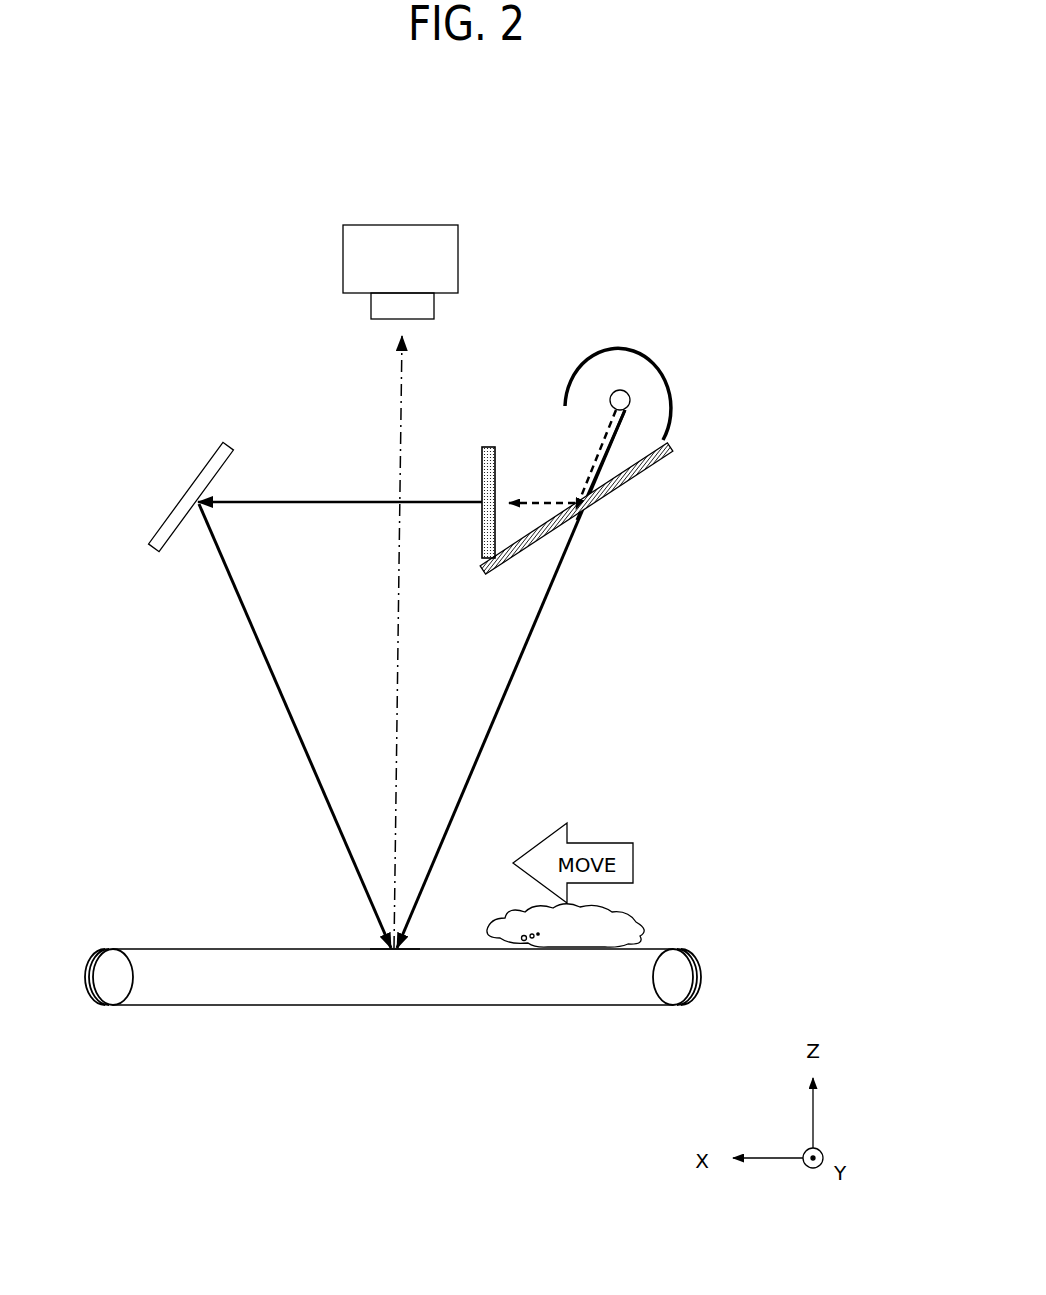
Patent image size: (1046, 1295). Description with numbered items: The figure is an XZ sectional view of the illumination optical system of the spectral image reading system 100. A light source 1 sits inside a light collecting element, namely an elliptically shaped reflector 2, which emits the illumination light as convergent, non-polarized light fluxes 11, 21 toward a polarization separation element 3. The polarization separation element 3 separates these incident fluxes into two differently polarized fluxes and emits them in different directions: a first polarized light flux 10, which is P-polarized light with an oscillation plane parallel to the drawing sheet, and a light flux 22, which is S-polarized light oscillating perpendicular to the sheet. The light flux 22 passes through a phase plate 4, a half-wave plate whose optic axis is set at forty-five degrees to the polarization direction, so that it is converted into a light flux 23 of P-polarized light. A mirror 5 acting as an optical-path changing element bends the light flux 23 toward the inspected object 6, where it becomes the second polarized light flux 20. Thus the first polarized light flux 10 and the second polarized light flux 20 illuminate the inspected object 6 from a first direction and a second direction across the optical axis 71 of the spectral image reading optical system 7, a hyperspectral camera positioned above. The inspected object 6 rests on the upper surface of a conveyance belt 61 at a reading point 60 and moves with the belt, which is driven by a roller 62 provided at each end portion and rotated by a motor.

The spectral image reading system 100 is at (592, 210).
The light source 1 is at (630, 390).
The light collecting element (reflector) 2 is at (668, 385).
The polarization separation element 3 is at (667, 452).
The phase plate (λ/2 plate) 4 is at (497, 527).
The optical-path changing element (mirror) 5 is at (190, 492).
The inspected object 6 is at (630, 918).
The spectral image reading optical system 7 is at (343, 258).
The first polarized light flux 10 is at (502, 695).
The non-polarized light flux 11 is at (607, 452).
The second polarized light flux 20 is at (280, 688).
The non-polarized light flux 21 is at (597, 458).
The light flux (S-polarized light) 22 is at (540, 500).
The light flux (P-polarized light) 23 is at (313, 500).
The reading point 60 is at (392, 950).
The conveyance belt 61 is at (309, 995).
The roller 62 is at (110, 988).
The optical axis 71 is at (395, 772).